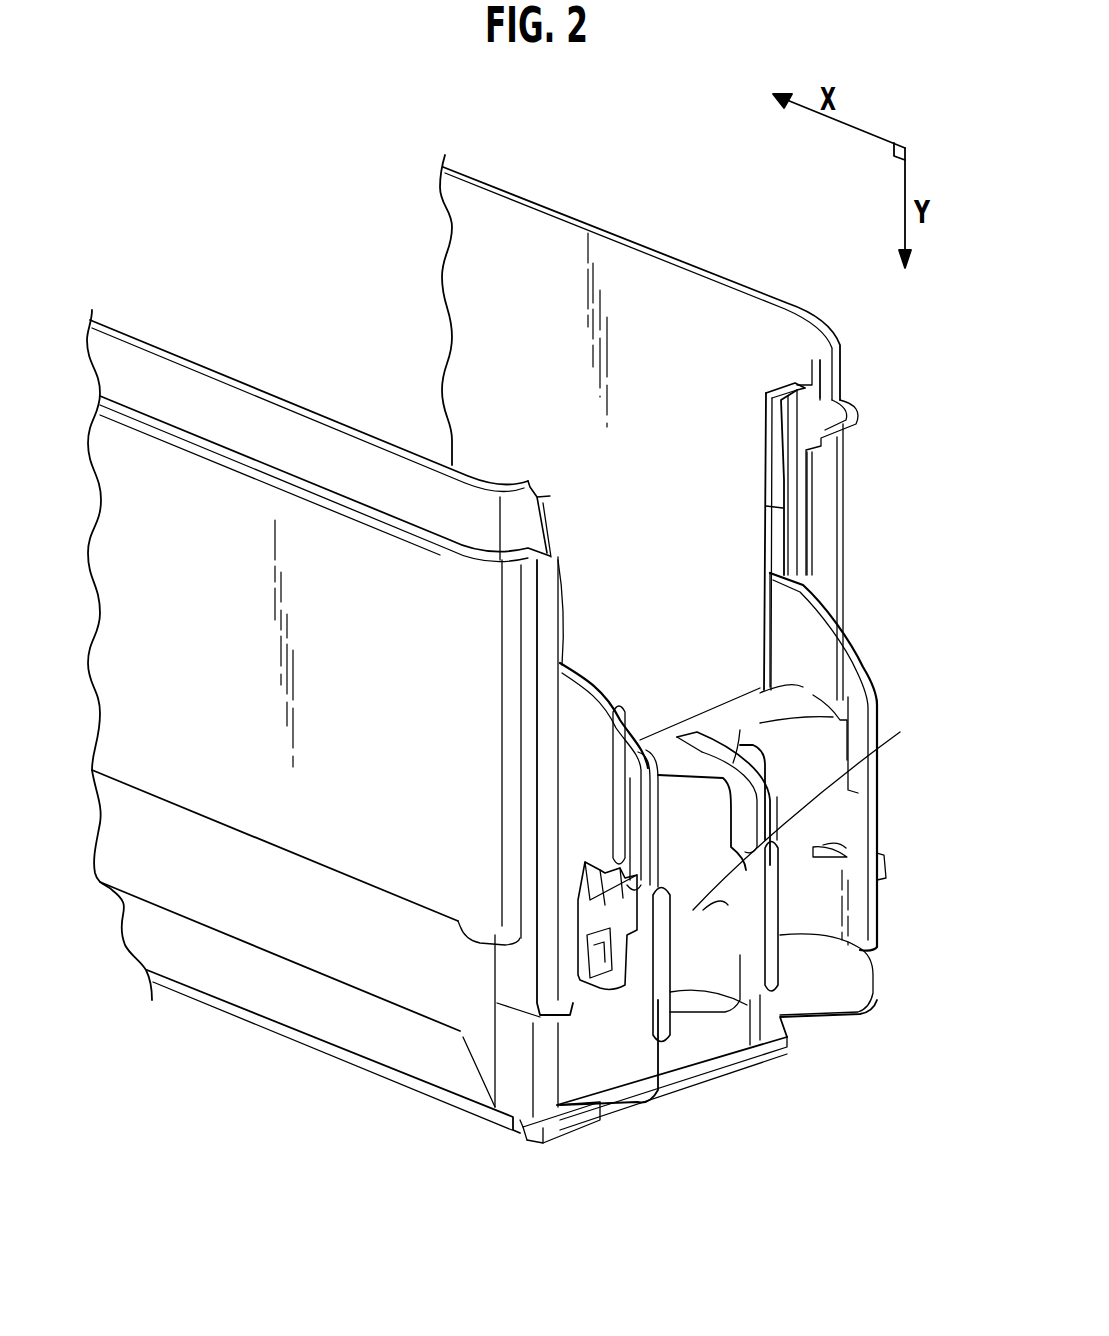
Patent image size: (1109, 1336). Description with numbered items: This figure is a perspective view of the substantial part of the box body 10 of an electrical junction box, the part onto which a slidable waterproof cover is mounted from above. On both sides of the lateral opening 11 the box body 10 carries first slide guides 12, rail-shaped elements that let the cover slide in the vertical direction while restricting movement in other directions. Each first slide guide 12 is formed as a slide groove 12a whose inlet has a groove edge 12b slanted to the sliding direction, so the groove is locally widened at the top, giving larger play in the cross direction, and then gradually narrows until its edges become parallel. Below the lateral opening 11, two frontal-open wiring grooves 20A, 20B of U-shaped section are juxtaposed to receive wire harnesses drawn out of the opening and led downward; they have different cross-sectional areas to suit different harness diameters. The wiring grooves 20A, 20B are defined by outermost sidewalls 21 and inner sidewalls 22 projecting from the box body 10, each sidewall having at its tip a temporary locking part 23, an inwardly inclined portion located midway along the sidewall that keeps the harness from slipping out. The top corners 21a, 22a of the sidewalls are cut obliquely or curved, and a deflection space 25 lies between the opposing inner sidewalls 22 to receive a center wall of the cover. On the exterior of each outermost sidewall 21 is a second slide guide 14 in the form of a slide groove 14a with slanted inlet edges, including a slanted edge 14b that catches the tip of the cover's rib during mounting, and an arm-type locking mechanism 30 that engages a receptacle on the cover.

The box body 10 is at (617, 232).
The lateral opening 11 is at (703, 375).
The first slide guide 12 is at (547, 506).
The slide groove 12a is at (800, 540).
The groove edge 12b is at (780, 432).
The second slide guide 14 is at (616, 703).
The slide groove 14a is at (610, 712).
The slanted edge 14b is at (640, 722).
The wiring groove 20A is at (706, 1042).
The wiring groove 20B is at (825, 988).
The sidewall 21 is at (637, 1078).
The top corner 21a is at (871, 688).
The sidewall 22 is at (758, 1032).
The top corner 22a is at (760, 782).
The temporary locking part 23 is at (760, 897).
The deflection space 25 is at (740, 767).
The locking mechanism 30 is at (588, 994).